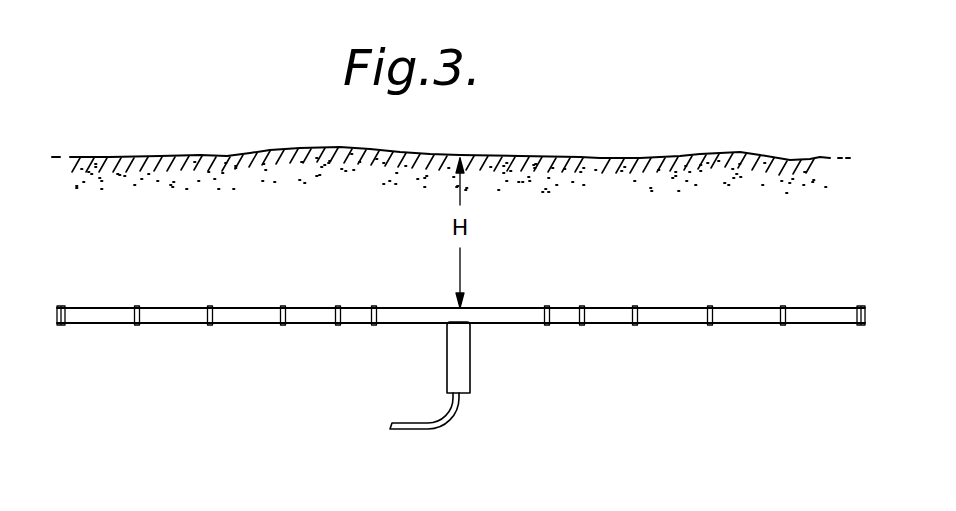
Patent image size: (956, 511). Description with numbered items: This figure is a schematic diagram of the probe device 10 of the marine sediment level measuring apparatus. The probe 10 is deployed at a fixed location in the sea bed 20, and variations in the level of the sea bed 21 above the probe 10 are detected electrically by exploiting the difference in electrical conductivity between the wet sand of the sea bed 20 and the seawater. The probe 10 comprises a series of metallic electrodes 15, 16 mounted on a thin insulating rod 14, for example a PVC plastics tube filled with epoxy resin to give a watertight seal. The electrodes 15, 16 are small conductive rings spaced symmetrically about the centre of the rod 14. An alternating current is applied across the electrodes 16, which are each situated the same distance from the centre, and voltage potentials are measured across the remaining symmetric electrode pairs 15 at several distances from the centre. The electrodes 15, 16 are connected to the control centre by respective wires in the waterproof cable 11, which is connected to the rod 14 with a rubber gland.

The probe device 10 is at (461, 360).
The cable 11 is at (430, 428).
The rod 14 is at (173, 317).
The electrodes 15 is at (208, 308).
The electrodes 16 is at (283, 308).
The sea bed 20 is at (269, 233).
The level of the sea bed 21 is at (598, 157).